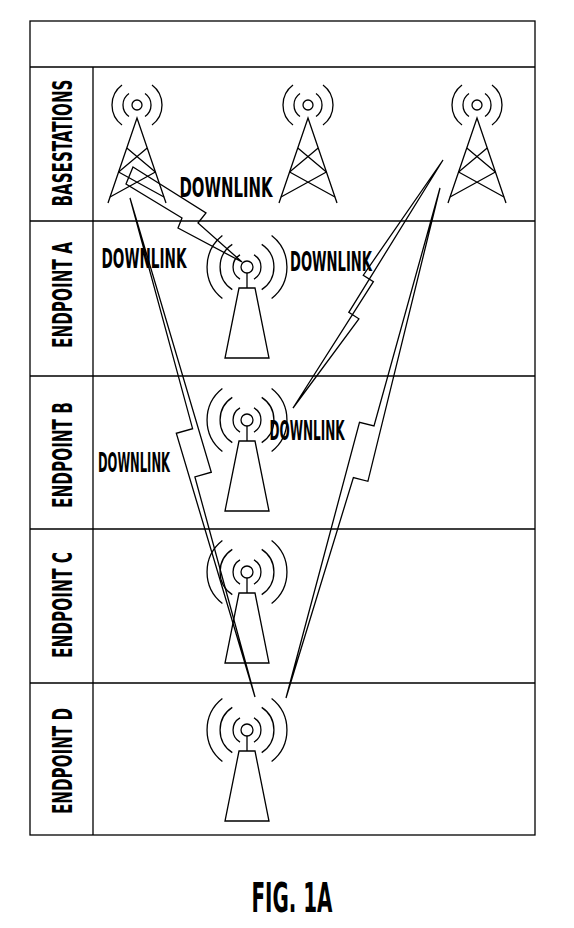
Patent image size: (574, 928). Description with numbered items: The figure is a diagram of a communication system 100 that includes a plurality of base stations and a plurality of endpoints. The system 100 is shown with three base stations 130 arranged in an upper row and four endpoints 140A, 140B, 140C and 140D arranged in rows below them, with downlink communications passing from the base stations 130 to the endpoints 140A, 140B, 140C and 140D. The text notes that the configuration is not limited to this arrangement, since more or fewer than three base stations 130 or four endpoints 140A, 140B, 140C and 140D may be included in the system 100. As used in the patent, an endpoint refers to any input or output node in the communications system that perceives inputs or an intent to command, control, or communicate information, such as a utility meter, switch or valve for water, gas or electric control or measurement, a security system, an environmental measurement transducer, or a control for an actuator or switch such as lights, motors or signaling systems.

The communication system 100 is at (203, 63).
The base stations 130 is at (380, 135).
The endpoint 140A is at (316, 334).
The endpoint 140B is at (316, 505).
The endpoint 140C is at (180, 643).
The endpoint 140D is at (317, 797).